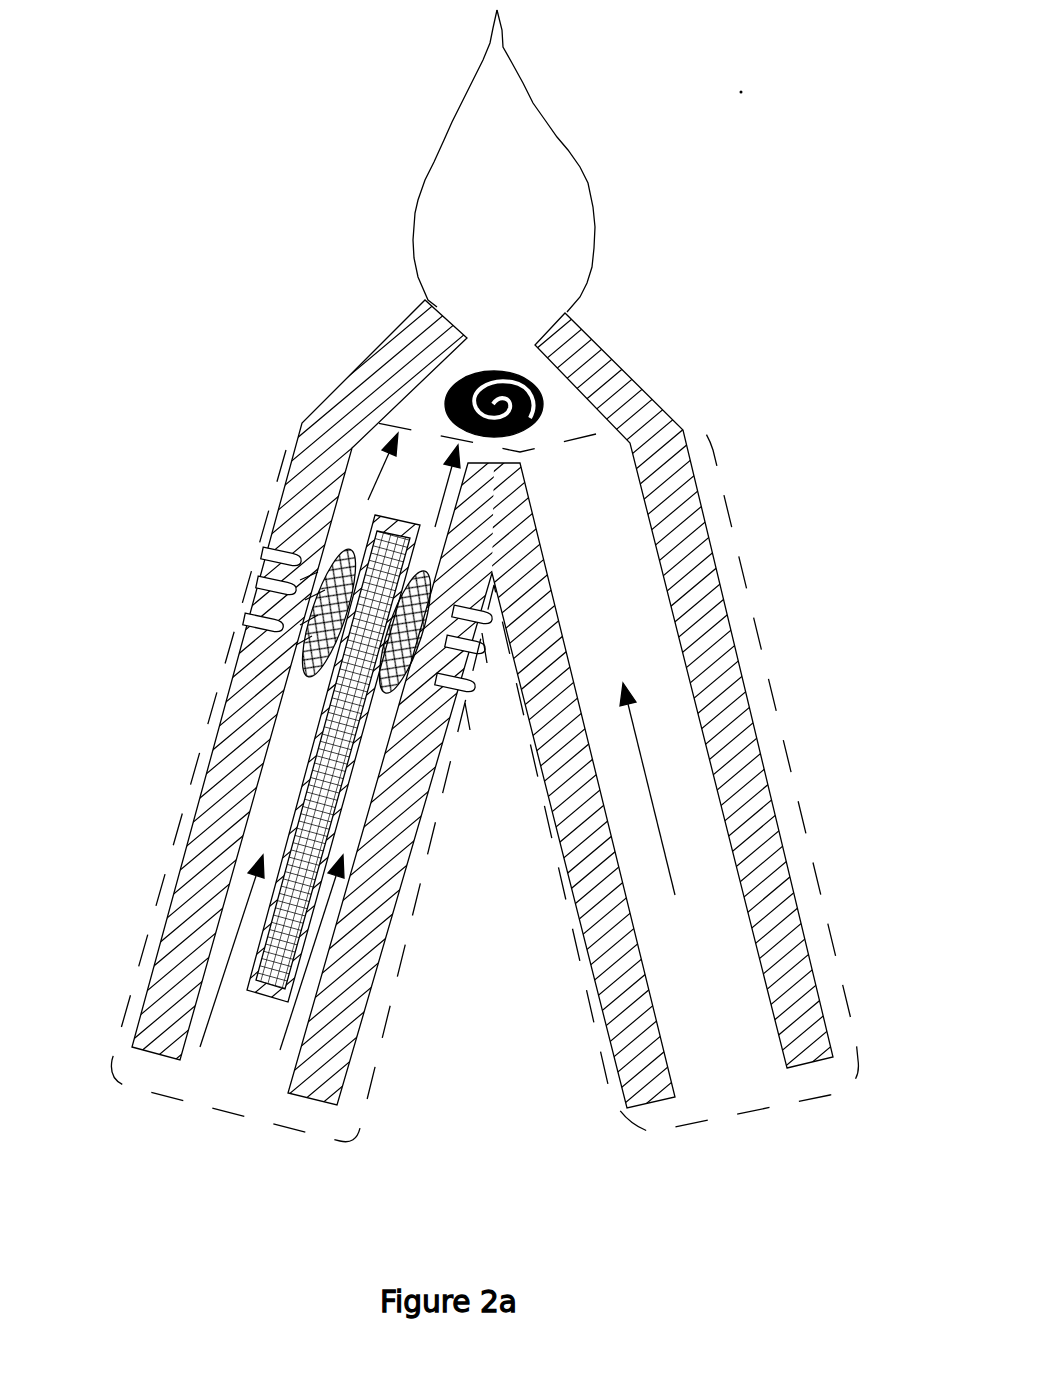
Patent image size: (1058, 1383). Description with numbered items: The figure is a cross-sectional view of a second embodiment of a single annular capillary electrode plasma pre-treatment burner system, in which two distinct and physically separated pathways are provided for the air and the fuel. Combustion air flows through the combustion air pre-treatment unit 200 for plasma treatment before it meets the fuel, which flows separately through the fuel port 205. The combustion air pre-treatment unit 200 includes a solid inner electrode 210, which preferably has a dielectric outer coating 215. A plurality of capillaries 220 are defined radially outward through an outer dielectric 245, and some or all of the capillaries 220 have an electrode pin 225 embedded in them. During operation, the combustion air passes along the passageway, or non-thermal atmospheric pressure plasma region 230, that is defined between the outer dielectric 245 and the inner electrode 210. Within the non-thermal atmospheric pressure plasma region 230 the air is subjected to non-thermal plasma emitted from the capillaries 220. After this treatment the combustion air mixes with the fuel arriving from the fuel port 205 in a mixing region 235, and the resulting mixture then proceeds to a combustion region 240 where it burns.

The combustion air pre-treatment unit 200 is at (258, 1145).
The fuel port 205 is at (752, 1153).
The solid inner electrode 210 is at (269, 913).
The dielectric outer coating 215 is at (269, 838).
The capillaries 220 is at (332, 550).
The electrode pin 225 is at (211, 601).
The non-thermal atmospheric pressure plasma region 230 is at (406, 567).
The mixing region 235 is at (559, 400).
The combustion region 240 is at (620, 220).
The outer dielectric 245 is at (195, 755).